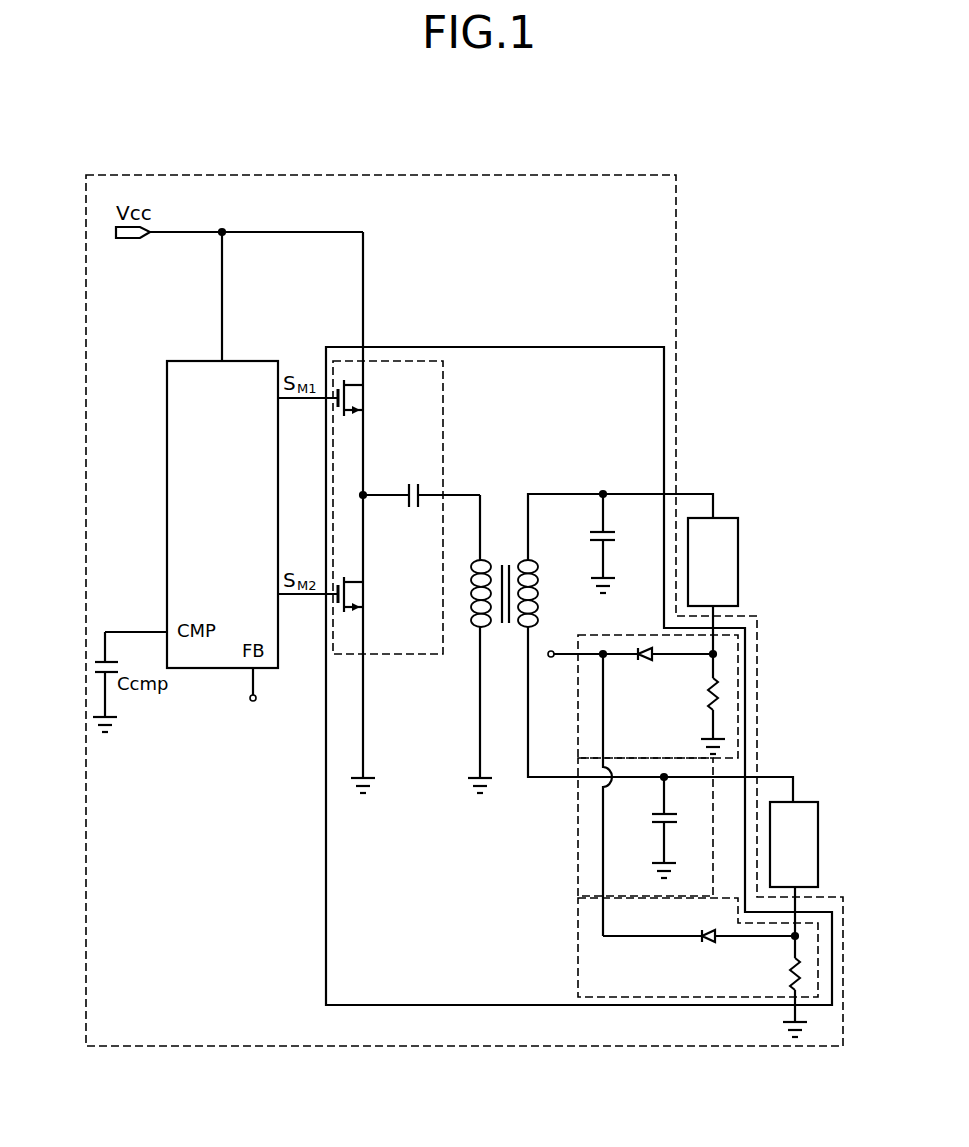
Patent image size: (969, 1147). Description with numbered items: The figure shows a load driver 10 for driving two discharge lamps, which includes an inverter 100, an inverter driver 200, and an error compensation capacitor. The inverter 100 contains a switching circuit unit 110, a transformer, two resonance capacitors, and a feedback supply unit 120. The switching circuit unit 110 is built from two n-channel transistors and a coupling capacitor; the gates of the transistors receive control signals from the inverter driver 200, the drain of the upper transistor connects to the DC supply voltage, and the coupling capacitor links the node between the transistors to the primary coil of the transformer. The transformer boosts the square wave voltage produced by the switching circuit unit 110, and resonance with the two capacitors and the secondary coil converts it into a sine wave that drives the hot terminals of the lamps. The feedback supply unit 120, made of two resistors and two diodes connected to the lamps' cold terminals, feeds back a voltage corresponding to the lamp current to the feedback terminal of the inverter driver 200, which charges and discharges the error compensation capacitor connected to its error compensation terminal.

The load driver 10 is at (676, 250).
The inverter 100 is at (541, 347).
The switching circuit unit 110 is at (443, 395).
The feedback supply unit 120 is at (578, 925).
The inverter driver 200 is at (248, 361).